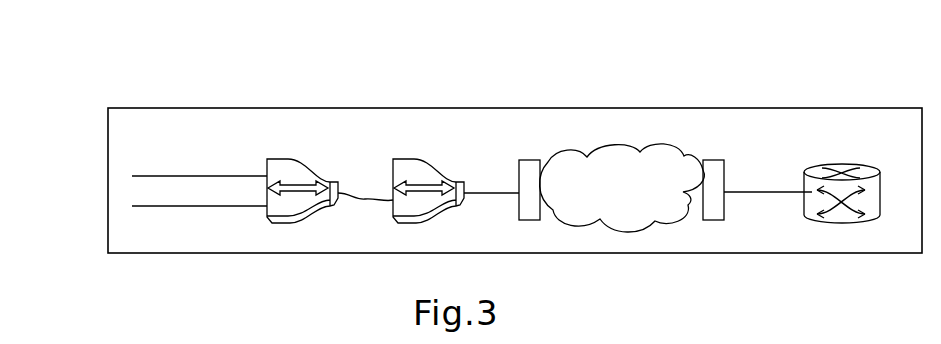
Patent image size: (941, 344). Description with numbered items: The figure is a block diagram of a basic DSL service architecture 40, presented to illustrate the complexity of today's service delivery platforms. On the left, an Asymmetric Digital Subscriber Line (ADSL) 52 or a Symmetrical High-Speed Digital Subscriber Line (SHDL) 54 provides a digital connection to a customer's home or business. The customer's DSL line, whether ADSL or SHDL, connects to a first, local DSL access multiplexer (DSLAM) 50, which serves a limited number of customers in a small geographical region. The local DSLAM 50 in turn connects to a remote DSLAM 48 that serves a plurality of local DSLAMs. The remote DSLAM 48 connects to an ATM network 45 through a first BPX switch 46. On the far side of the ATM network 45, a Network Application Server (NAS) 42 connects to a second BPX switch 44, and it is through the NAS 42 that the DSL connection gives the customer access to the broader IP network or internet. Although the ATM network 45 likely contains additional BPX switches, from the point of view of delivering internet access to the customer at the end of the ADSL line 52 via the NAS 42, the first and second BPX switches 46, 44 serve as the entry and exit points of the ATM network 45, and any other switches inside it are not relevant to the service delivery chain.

The DSL service architecture 40 is at (147, 96).
The Network Application Server (NAS) 42 is at (868, 167).
The second BPX switch 44 is at (713, 220).
The ATM network 45 is at (617, 213).
The first BPX switch 46 is at (530, 220).
The remote DSL access multiplexer (DSLAM) 48 is at (407, 158).
The local DSL access multiplexer (DSLAM) 50 is at (278, 160).
The Asymmetric Digital Subscriber Line (ADSL) 52 is at (237, 175).
The Symmetrical High-Speed Digital Subscriber Line (SHDL) 54 is at (160, 207).